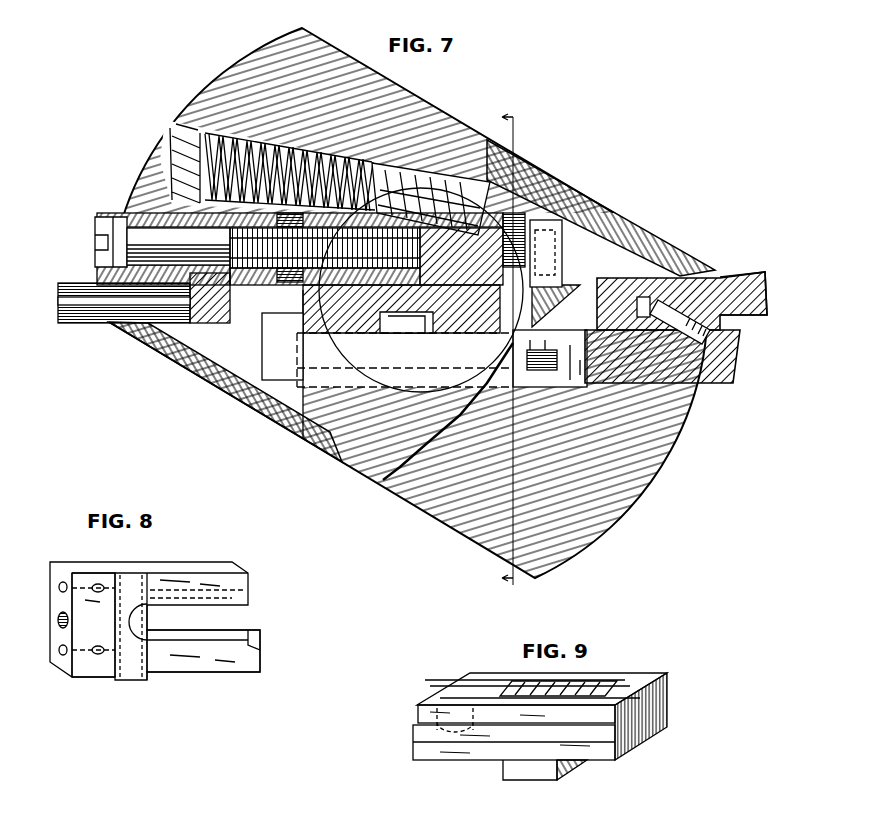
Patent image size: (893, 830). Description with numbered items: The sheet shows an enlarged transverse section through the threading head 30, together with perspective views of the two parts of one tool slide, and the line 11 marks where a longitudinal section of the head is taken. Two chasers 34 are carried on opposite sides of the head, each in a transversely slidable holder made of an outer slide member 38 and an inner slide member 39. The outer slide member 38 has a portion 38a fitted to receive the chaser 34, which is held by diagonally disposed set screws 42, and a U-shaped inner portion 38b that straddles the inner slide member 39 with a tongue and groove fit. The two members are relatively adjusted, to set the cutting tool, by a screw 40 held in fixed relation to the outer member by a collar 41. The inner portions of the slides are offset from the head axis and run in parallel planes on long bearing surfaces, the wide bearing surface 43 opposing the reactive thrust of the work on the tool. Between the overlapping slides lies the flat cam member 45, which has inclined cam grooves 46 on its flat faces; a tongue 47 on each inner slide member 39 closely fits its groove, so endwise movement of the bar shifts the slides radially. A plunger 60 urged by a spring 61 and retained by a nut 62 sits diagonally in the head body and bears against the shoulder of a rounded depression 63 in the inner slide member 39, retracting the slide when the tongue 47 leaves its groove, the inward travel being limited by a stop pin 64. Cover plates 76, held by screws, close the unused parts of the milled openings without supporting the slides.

In FIG. 7, the section line 11— 11 is at (491, 349).
In FIG. 7, the threading head 30 is at (645, 472).
In FIG. 7, the chaser 34 is at (752, 296).
In FIG. 7, the outer slide member 38 is at (113, 213).
In FIG. 8, the outer slide member 38 is at (103, 674).
In FIG. 8, the tool-receiving portion 38a is at (95, 614).
In FIG. 8, the U-shaped inner portion 38b is at (239, 672).
In FIG. 7, the inner slide member 39 is at (516, 192).
In FIG. 9, the inner slide member 39 is at (668, 720).
In FIG. 7, the screw 40 is at (97, 232).
In FIG. 7, the collar 41 is at (254, 272).
In FIG. 7, the set screw 42 is at (733, 340).
In FIG. 7, the bearing surface 43 is at (658, 388).
In FIG. 7, the cam member 45 is at (303, 326).
In FIG. 7, the cam groove 46 is at (303, 360).
In FIG. 7, the tongue 47 is at (423, 314).
In FIG. 9, the tongue 47 is at (513, 780).
In FIG. 7, the plunger 60 is at (416, 176).
In FIG. 7, the spring 61 is at (338, 152).
In FIG. 7, the nut 62 is at (200, 126).
In FIG. 9, the rounded depression 63 is at (588, 686).
In FIG. 7, the stop pin 64 is at (563, 248).
In FIG. 7, the cover plate 76 is at (580, 196).